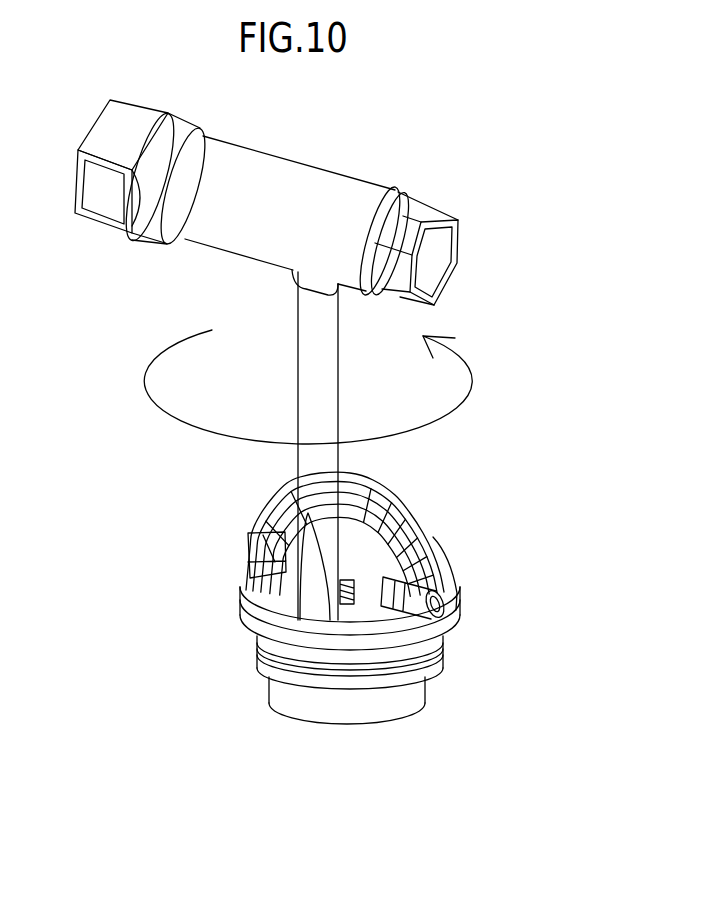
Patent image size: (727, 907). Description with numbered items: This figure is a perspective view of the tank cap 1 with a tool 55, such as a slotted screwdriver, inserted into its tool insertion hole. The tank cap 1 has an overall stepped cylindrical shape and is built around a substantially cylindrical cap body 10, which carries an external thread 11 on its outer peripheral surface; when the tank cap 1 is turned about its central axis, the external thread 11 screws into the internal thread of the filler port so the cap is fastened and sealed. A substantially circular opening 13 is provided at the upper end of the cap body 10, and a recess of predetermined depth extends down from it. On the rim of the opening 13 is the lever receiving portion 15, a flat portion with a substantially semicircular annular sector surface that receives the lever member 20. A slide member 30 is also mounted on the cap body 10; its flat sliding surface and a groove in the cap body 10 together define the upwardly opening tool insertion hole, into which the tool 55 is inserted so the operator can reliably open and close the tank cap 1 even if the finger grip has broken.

The tank cap 1 is at (384, 619).
The cap body 10 is at (403, 698).
The external thread 11 is at (437, 653).
The opening 13 is at (352, 612).
The lever receiving portion 15 is at (258, 595).
The lever member 20 is at (413, 517).
The slide member 30 is at (453, 573).
The tool 55 is at (322, 362).